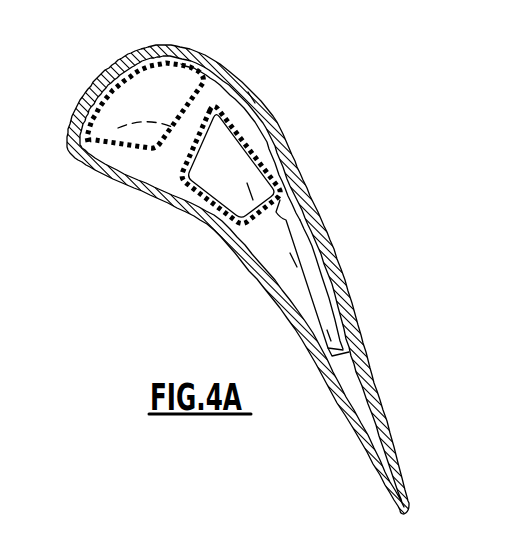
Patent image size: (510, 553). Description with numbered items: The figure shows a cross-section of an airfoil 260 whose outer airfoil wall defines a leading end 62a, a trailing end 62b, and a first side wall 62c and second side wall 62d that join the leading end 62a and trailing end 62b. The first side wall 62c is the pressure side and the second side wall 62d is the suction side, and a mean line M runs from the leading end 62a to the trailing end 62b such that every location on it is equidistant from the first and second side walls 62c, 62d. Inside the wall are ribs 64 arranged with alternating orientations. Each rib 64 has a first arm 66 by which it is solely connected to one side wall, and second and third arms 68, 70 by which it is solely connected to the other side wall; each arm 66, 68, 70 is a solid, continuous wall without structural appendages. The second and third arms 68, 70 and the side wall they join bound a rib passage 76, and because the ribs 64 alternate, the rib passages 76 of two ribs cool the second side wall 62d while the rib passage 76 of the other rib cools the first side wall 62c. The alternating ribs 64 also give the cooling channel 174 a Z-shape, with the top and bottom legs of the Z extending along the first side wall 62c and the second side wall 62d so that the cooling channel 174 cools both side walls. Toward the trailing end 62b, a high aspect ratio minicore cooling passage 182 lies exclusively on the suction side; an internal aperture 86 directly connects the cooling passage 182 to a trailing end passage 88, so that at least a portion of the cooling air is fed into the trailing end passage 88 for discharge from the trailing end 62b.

The airfoil 260 is at (338, 82).
The leading end 62a is at (67, 157).
The trailing end 62b is at (410, 507).
The first side wall 62c is at (272, 298).
The second side wall 62d is at (311, 198).
The rib 64 is at (226, 83).
The first arm 66 is at (238, 99).
The second arm 68 is at (258, 150).
The third arm 70 is at (262, 163).
The rib passage 76 is at (184, 73).
The cooling channel 174 is at (229, 95).
The cooling passage 182 is at (332, 313).
The internal aperture 86 is at (343, 344).
The trailing end passage 88 is at (350, 368).
The mean line M is at (283, 240).